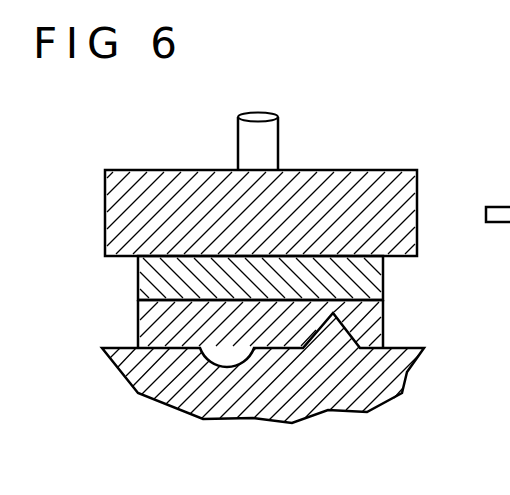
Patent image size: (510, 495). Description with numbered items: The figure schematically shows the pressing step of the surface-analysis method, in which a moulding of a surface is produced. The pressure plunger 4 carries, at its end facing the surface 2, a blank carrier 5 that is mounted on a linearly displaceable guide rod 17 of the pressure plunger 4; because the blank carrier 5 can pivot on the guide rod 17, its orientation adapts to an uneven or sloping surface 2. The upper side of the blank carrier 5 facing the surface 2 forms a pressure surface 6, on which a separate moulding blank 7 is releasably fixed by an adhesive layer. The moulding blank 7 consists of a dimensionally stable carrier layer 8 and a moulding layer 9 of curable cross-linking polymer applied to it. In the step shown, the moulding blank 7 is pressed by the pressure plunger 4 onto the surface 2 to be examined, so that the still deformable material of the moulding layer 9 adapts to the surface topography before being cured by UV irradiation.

The surface 2 is at (410, 347).
The pressure plunger 4 is at (343, 146).
The blank carrier 5 is at (400, 200).
The pressure surface 6 is at (362, 261).
The moulding blank 7 is at (117, 304).
The carrier layer 8 is at (155, 284).
The moulding layer 9 is at (155, 337).
The guide rod 17 is at (250, 122).